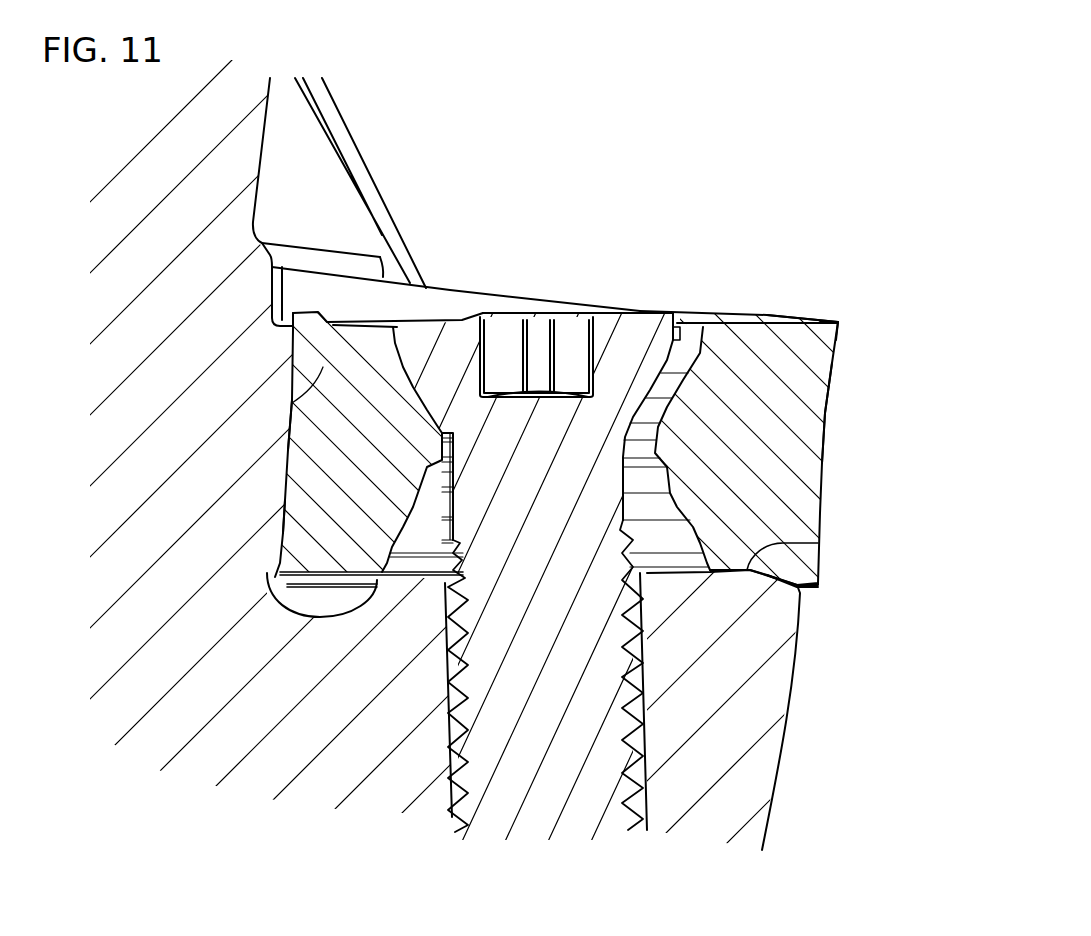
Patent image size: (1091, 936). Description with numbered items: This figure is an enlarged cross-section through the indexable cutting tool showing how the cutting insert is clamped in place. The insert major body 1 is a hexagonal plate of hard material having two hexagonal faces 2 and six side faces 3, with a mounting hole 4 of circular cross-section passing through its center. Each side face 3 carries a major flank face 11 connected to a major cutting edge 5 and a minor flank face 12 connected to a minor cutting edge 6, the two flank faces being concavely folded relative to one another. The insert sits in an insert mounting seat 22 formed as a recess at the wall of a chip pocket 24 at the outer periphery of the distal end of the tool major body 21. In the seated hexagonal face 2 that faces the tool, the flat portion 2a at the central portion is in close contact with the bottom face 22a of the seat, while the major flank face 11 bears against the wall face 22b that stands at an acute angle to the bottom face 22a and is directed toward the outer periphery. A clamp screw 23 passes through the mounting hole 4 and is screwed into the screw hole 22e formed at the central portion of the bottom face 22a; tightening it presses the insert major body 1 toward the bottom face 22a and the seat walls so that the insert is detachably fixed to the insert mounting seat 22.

The insert major body 1 is at (836, 266).
The hexagonal face 2 is at (772, 288).
The flat portion 2a is at (758, 317).
The side face 3 is at (191, 403).
The mounting hole 4 is at (686, 338).
The major cutting edge 5 is at (818, 586).
The minor cutting edge 6 is at (838, 322).
The major flank face 11 is at (288, 420).
The minor flank face 12 is at (283, 515).
The tool major body 21 is at (838, 693).
The insert mounting seat 22 is at (782, 612).
The bottom face 22a is at (790, 543).
The wall face 22b is at (323, 367).
The screw hole 22e is at (665, 742).
The clamp screw 23 is at (633, 333).
The chip pocket 24 is at (440, 158).